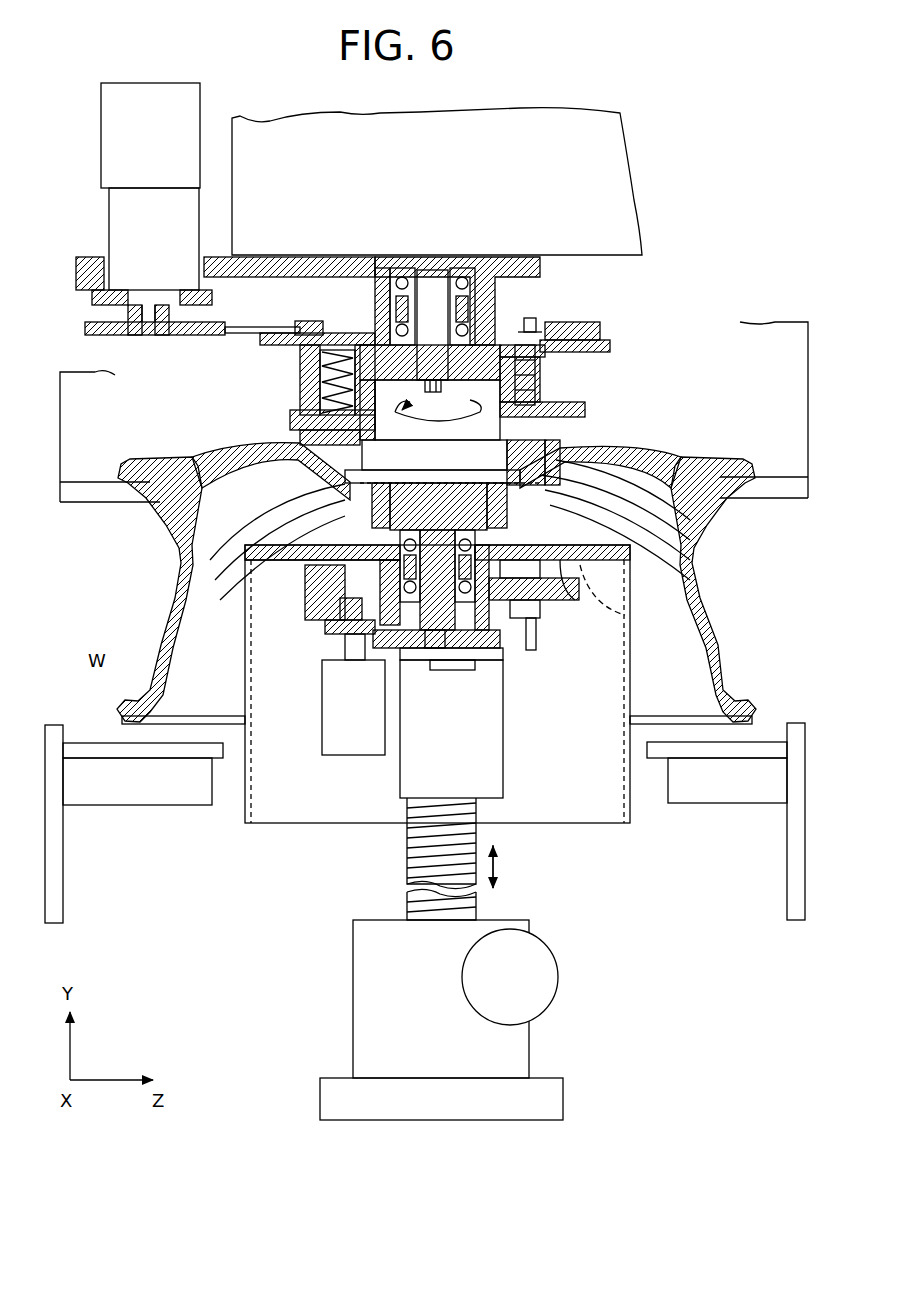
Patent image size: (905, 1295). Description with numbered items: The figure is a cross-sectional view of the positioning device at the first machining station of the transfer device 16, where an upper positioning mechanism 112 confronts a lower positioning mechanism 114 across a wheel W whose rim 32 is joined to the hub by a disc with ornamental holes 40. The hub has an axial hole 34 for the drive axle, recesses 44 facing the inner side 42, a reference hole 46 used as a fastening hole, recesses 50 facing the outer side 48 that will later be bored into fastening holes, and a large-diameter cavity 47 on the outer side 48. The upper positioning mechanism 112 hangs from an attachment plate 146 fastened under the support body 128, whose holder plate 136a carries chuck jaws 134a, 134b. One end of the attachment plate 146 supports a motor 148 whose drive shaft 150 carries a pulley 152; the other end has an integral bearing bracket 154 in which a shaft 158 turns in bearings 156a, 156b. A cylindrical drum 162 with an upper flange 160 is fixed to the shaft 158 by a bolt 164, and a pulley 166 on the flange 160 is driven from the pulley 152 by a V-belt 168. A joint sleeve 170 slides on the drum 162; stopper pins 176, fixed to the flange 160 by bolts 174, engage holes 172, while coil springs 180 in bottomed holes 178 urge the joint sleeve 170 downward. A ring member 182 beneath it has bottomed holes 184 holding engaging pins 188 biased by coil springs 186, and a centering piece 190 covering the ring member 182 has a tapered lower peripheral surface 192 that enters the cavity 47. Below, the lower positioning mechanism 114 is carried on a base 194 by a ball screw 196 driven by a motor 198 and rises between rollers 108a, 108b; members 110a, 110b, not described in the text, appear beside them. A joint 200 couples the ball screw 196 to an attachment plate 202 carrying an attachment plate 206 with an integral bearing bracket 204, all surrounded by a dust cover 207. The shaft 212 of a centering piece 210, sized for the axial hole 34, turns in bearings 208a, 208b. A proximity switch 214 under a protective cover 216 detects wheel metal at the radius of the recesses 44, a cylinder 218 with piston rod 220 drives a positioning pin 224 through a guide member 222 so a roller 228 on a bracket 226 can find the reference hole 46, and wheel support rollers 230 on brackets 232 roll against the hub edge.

The transfer device 16 is at (70, 850).
The rim 32 is at (722, 640).
The axial hole 34 is at (308, 592).
The ornamental holes 40 is at (680, 470).
The inner side 42 is at (690, 705).
The recesses 44 is at (630, 627).
The reference hole 46 is at (330, 538).
The large-diameter cavity 47 is at (434, 455).
The outer side 48 is at (168, 438).
The recesses 50 is at (442, 466).
The roller 108a is at (128, 785).
The roller 108b is at (745, 790).
The left support table 110a is at (108, 748).
The right support table 110b is at (705, 750).
The upper positioning mechanism 112 is at (648, 292).
The lower positioning mechanism 114 is at (208, 822).
The support body 128 is at (535, 160).
The chuck finger 134a is at (92, 497).
The chuck finger 134b is at (775, 495).
The holder plate 136a is at (770, 362).
The attachment plate 146 is at (303, 268).
The motor 148 is at (183, 116).
The drive shaft 150 is at (152, 308).
The pulley 152 is at (178, 335).
The bearing bracket 154 is at (485, 290).
The bearing 156a is at (395, 320).
The bearing 156b is at (390, 322).
The shaft 158 is at (433, 318).
The upper flange 160 is at (593, 342).
The cylindrical drum 162 is at (555, 372).
The bolt 164 is at (430, 392).
The pulley 166 is at (568, 324).
The V-belt 168 is at (255, 327).
The joint sleeve 170 is at (545, 387).
The holes 172 is at (565, 407).
The bolts 174 is at (530, 320).
The stopper pins 176 is at (545, 355).
The bottomed holes 178 is at (325, 370).
The coil springs 180 is at (320, 390).
The ring member 182 is at (520, 447).
The bottomed holes 184 is at (315, 412).
The coil springs 186 is at (320, 430).
The engaging pins 188 is at (325, 490).
The centering piece 190 is at (660, 465).
The tapered lower peripheral surface 192 is at (695, 562).
The base 194 is at (520, 1050).
The ball screw 196 is at (405, 870).
The motor 198 is at (540, 978).
The joint 200 is at (502, 752).
The attachment plate 202 is at (495, 655).
The bearing bracket 204 is at (478, 690).
The attachment plate 206 is at (540, 592).
The dust cover 207 is at (250, 785).
The bearing 208a is at (300, 635).
The bearing 208b is at (418, 662).
The centering piece 210 is at (485, 572).
The shaft 212 is at (453, 702).
The proximity switch 214 is at (530, 622).
The protective cover 216 is at (630, 607).
The cylinder 218 is at (350, 760).
The piston rod 220 is at (345, 657).
The guide member 222 is at (175, 637).
The positioning pin 224 is at (350, 615).
The bracket 226 is at (300, 595).
The roller 228 is at (325, 520).
The wheel support rollers 230 is at (340, 572).
The brackets 232 is at (280, 560).